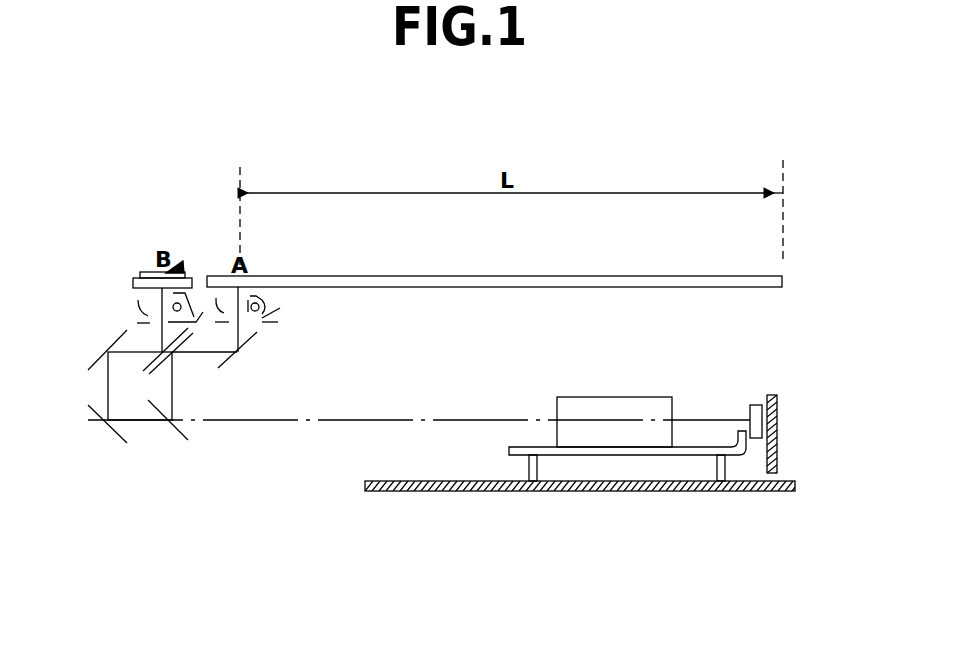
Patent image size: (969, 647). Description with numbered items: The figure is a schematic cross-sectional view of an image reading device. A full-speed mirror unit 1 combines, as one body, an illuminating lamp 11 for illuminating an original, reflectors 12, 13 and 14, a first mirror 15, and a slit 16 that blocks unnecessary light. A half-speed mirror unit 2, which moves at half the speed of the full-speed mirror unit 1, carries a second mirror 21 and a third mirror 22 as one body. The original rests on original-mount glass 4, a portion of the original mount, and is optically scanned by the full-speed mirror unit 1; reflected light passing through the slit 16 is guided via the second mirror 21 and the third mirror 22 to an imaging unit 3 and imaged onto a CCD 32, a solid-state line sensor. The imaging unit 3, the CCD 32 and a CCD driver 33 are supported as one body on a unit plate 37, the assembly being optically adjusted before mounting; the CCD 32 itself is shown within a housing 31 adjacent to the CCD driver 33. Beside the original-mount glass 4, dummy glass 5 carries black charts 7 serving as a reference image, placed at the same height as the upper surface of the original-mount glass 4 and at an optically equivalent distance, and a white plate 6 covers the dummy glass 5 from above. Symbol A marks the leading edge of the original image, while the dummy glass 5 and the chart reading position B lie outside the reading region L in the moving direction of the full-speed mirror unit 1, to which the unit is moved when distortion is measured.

The full-speed mirror unit 1 is at (289, 324).
The half-speed mirror unit 2 is at (153, 378).
The imaging unit 3 is at (605, 455).
The original-mount glass 4 is at (493, 276).
The dummy glass 5 is at (133, 285).
The white plate 6 is at (142, 270).
The charts 7 is at (176, 268).
The illuminating lamp 11 is at (252, 298).
The reflector 12 is at (266, 301).
The reflector 13 is at (263, 322).
The reflector 14 is at (221, 308).
The first mirror 15 is at (232, 360).
The slit 16 is at (247, 302).
The second mirror 21 is at (155, 367).
The third mirror 22 is at (175, 432).
The sample block 31 is at (613, 397).
The CCD 32 is at (757, 405).
The CCD driver 33 is at (773, 395).
The unit plate 37 is at (697, 491).